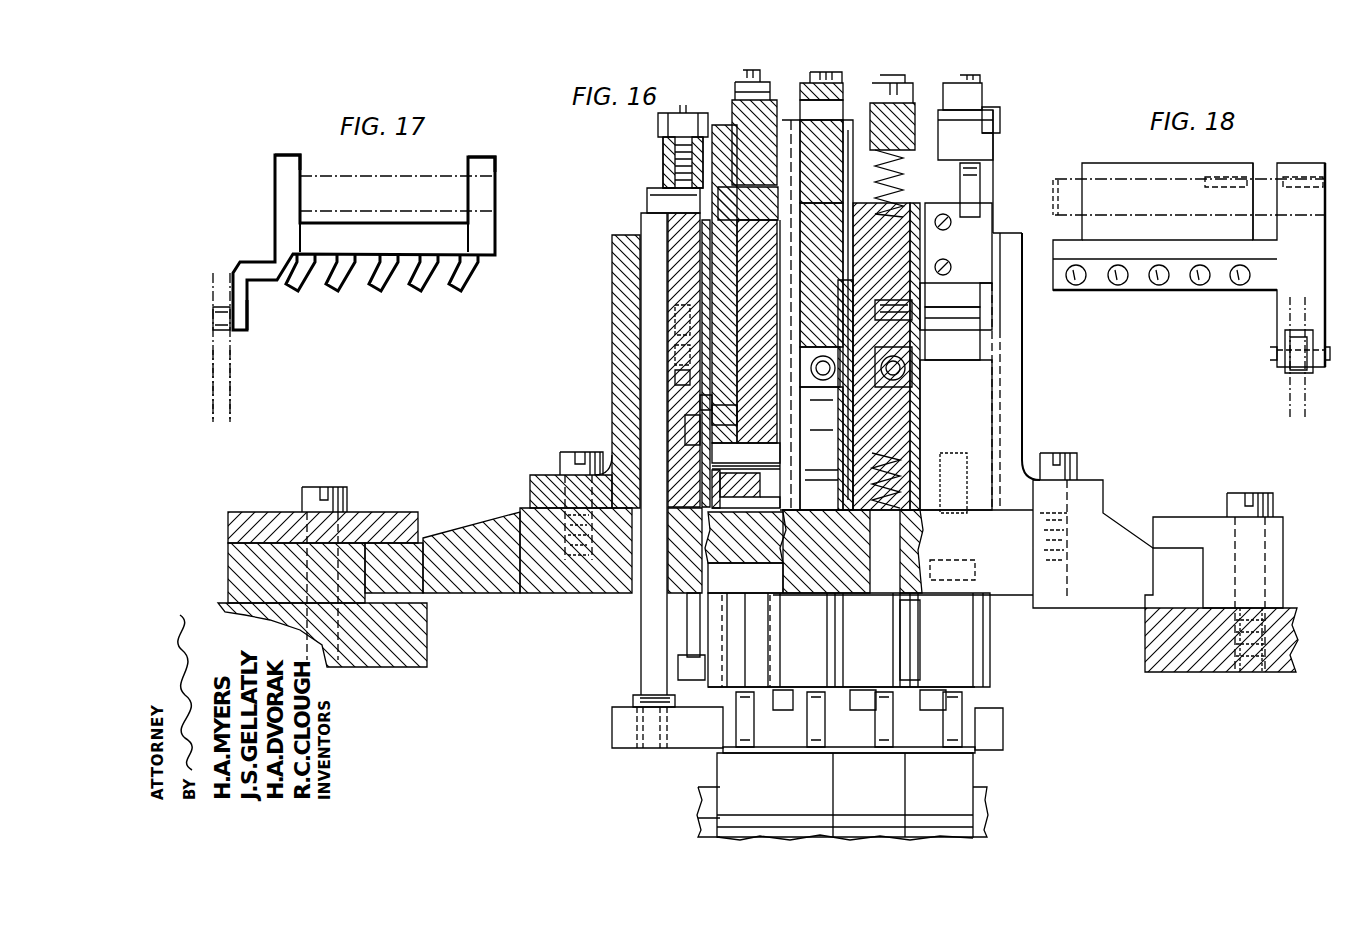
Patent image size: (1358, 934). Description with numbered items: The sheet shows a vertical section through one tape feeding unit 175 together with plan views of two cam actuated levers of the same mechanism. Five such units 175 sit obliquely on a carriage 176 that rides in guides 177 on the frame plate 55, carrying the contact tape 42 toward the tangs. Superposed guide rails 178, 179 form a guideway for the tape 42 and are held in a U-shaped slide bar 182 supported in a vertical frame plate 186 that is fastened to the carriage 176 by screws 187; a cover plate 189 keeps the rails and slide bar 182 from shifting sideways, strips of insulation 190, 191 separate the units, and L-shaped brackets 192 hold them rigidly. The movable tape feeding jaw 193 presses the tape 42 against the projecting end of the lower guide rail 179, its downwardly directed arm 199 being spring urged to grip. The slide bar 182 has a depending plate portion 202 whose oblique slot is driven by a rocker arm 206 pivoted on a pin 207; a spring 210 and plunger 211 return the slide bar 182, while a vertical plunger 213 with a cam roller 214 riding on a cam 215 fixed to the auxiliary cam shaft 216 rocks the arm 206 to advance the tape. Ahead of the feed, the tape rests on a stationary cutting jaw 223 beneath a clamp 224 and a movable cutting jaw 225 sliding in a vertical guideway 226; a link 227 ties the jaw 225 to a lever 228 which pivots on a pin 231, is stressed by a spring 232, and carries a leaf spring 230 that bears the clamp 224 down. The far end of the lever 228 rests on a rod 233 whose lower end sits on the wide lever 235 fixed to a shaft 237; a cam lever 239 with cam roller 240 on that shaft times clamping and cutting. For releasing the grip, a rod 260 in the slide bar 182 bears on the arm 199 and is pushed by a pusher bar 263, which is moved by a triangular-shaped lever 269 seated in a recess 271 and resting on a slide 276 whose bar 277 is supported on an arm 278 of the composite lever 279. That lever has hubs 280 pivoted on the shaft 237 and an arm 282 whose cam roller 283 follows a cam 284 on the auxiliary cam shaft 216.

In FIG. 16, the contact tape 42 is at (680, 276).
In FIG. 16, the frame plate 55 is at (385, 660).
In FIG. 16, the tape feeding unit 175 is at (728, 90).
In FIG. 16, the carriage 176 is at (528, 595).
In FIG. 16, the guides 177 is at (380, 512).
In FIG. 16, the upper guide rail 178 is at (685, 290).
In FIG. 16, the lower guide rail 179 is at (690, 302).
In FIG. 16, the slide bar 182 is at (740, 260).
In FIG. 16, the frame plate 186 is at (672, 250).
In FIG. 16, the screws 187 is at (905, 605).
In FIG. 16, the cover plate 189 is at (915, 400).
In FIG. 16, the strip of insulation 190 is at (1050, 333).
In FIG. 16, the strip of insulation 191 is at (1010, 545).
In FIG. 16, the L-shaped brackets 192 is at (625, 358).
In FIG. 16, the movable tape feeding jaw 193 is at (830, 280).
In FIG. 16, the downwardly directed arm 199 is at (895, 322).
In FIG. 16, the plate portion 202 is at (746, 475).
In FIG. 16, the rocker arm 206 is at (740, 412).
In FIG. 16, the pin 207 is at (849, 625).
In FIG. 16, the spring 210 is at (905, 370).
In FIG. 16, the plunger 211 is at (905, 386).
In FIG. 16, the plunger 213 is at (872, 682).
In FIG. 16, the cam roller 214 is at (740, 755).
In FIG. 16, the cam 215 is at (720, 778).
In FIG. 16, the auxiliary cam shaft 216 is at (698, 812).
In FIG. 16, the stationary cutting jaw 223 is at (965, 320).
In FIG. 16, the clamp 224 is at (985, 104).
In FIG. 16, the movable cutting jaw 225 is at (975, 198).
In FIG. 16, the guideway 226 is at (978, 236).
In FIG. 16, the link 227 is at (998, 150).
In FIG. 16, the lever 228 is at (662, 150).
In FIG. 16, the leaf spring 230 is at (840, 80).
In FIG. 16, the pin 231 is at (735, 150).
In FIG. 16, the spring 232 is at (912, 165).
In FIG. 16, the rod 233 is at (667, 203).
In FIG. 18, the lever 235 is at (1143, 285).
In FIG. 16, the lever 235 is at (700, 735).
In FIG. 17, the shaft 237 is at (350, 175).
In FIG. 18, the shaft 237 is at (1268, 190).
In FIG. 18, the cam lever 239 is at (1280, 302).
In FIG. 18, the cam roller 240 is at (1290, 380).
In FIG. 16, the rod 260 is at (690, 345).
In FIG. 16, the pusher bar 263 is at (690, 316).
In FIG. 16, the triangular-shaped lever 269 is at (688, 376).
In FIG. 16, the recess 271 is at (690, 425).
In FIG. 16, the slide 276 is at (735, 398).
In FIG. 16, the bar 277 is at (690, 623).
In FIG. 17, the arm 278 is at (350, 300).
In FIG. 16, the arm 278 is at (680, 667).
In FIG. 17, the composite lever 279 is at (275, 222).
In FIG. 17, the hubs 280 is at (275, 162).
In FIG. 17, the arm 282 is at (240, 312).
In FIG. 17, the cam roller 283 is at (213, 312).
In FIG. 17, the cam 284 is at (230, 385).